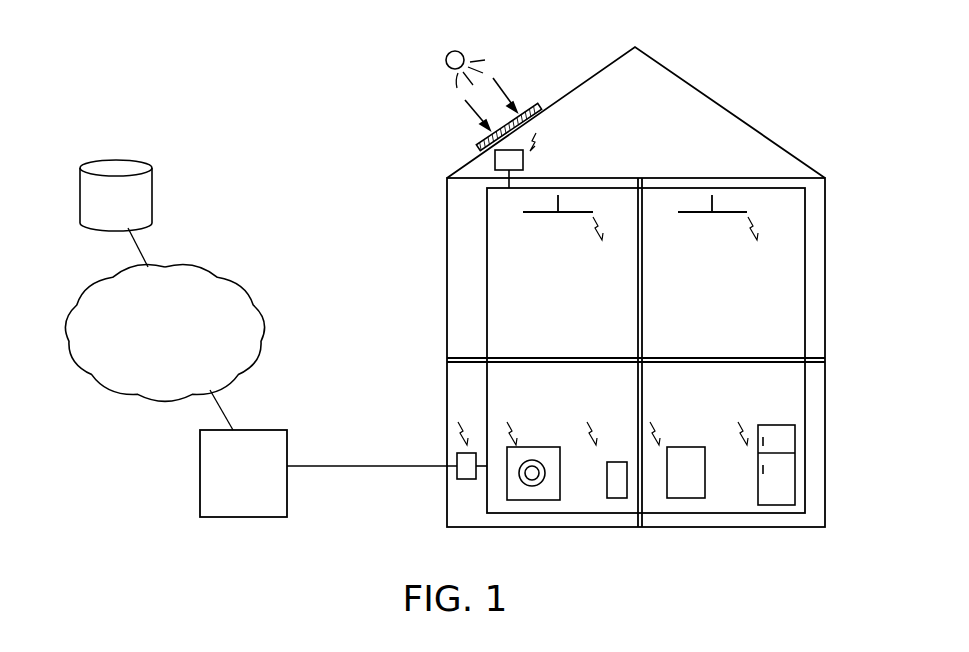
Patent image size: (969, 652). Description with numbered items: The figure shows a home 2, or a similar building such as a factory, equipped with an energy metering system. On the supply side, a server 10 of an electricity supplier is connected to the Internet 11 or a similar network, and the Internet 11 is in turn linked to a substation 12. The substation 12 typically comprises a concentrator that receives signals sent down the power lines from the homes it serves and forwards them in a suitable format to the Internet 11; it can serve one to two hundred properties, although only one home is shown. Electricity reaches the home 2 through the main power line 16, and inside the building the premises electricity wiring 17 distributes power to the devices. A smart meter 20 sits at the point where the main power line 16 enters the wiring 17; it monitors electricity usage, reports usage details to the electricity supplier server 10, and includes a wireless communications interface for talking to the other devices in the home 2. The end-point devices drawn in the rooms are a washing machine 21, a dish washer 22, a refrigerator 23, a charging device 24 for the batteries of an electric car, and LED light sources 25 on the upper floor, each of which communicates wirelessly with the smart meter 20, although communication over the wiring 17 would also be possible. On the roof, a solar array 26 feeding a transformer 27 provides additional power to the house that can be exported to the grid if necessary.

The home 2 is at (797, 150).
The server 10 is at (117, 158).
The Internet 11 is at (223, 273).
The substation 12 is at (200, 480).
The main power line 16 is at (360, 463).
The premises electricity wiring 17 is at (580, 517).
The smart meter 20 is at (466, 481).
The washing machine 21 is at (542, 447).
The dish washer 22 is at (687, 447).
The refrigerator 23 is at (777, 425).
The charging device 24 is at (618, 462).
The LED light sources 25 is at (537, 215).
The solar array 26 is at (530, 107).
The transformer 27 is at (523, 162).